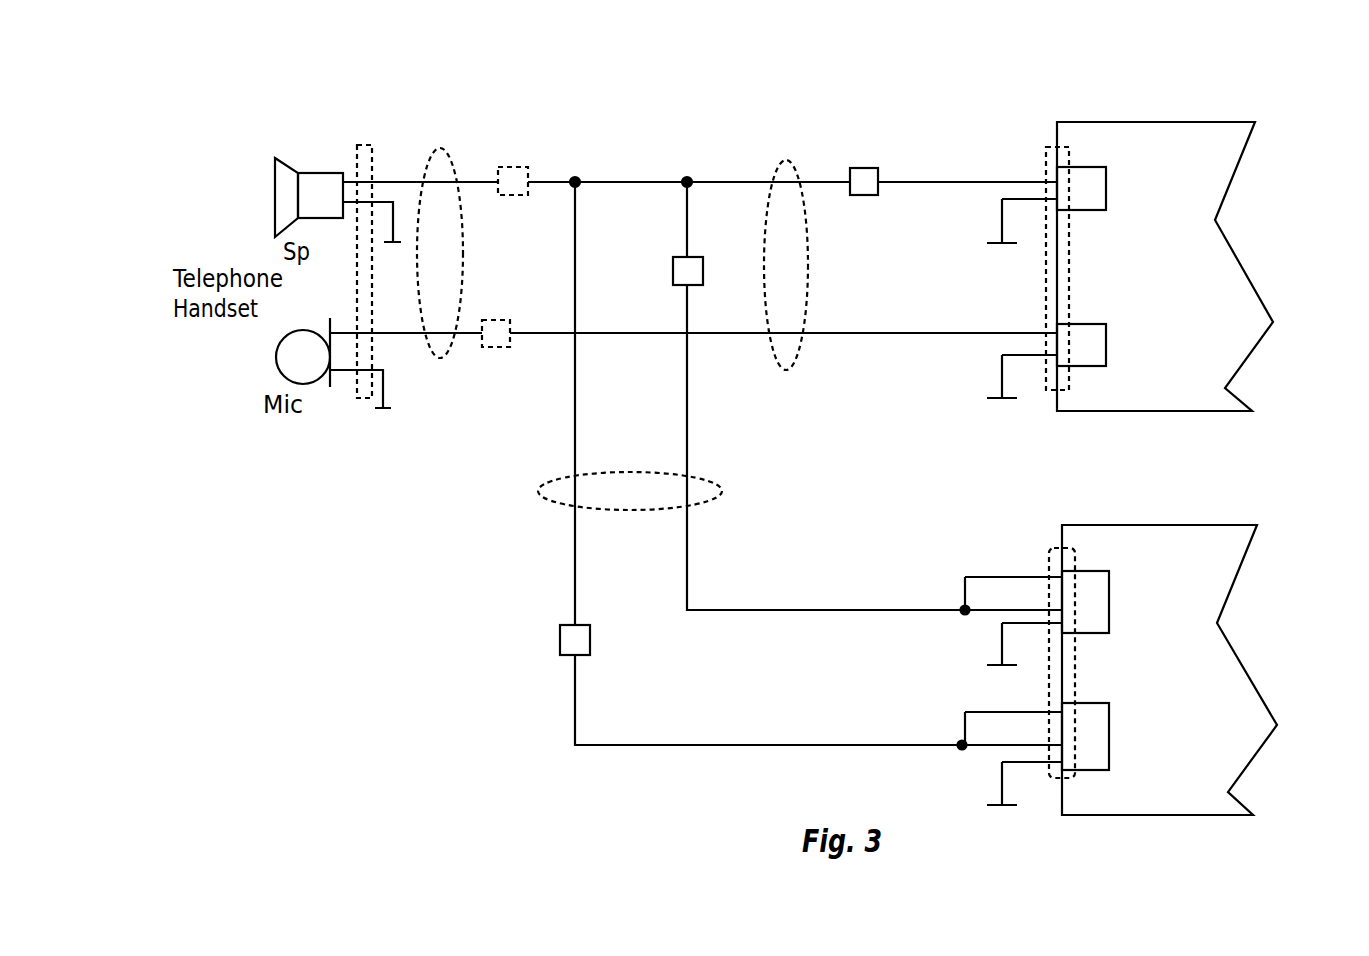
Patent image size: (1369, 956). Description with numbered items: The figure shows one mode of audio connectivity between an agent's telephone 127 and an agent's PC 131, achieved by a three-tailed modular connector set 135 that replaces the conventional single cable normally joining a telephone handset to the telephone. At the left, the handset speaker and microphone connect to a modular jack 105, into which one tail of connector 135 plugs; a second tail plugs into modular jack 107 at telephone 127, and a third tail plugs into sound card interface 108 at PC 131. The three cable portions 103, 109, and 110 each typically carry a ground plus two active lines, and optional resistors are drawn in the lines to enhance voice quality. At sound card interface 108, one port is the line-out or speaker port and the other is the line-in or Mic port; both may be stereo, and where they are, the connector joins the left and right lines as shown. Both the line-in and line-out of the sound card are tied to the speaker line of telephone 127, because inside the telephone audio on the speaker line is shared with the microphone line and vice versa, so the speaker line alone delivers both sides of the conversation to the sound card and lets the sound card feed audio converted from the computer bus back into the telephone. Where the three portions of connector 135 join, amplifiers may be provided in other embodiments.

The cable portion 103 is at (453, 160).
The modular jack 105 is at (367, 140).
The modular jack 107 is at (1045, 163).
The sound card interface 108 is at (1048, 558).
The cable portion 109 is at (773, 175).
The cable portion 110 is at (537, 492).
The agent's telephone 127 is at (1242, 118).
The agent's PC 131 is at (1270, 515).
The modular connector set 135 is at (783, 133).